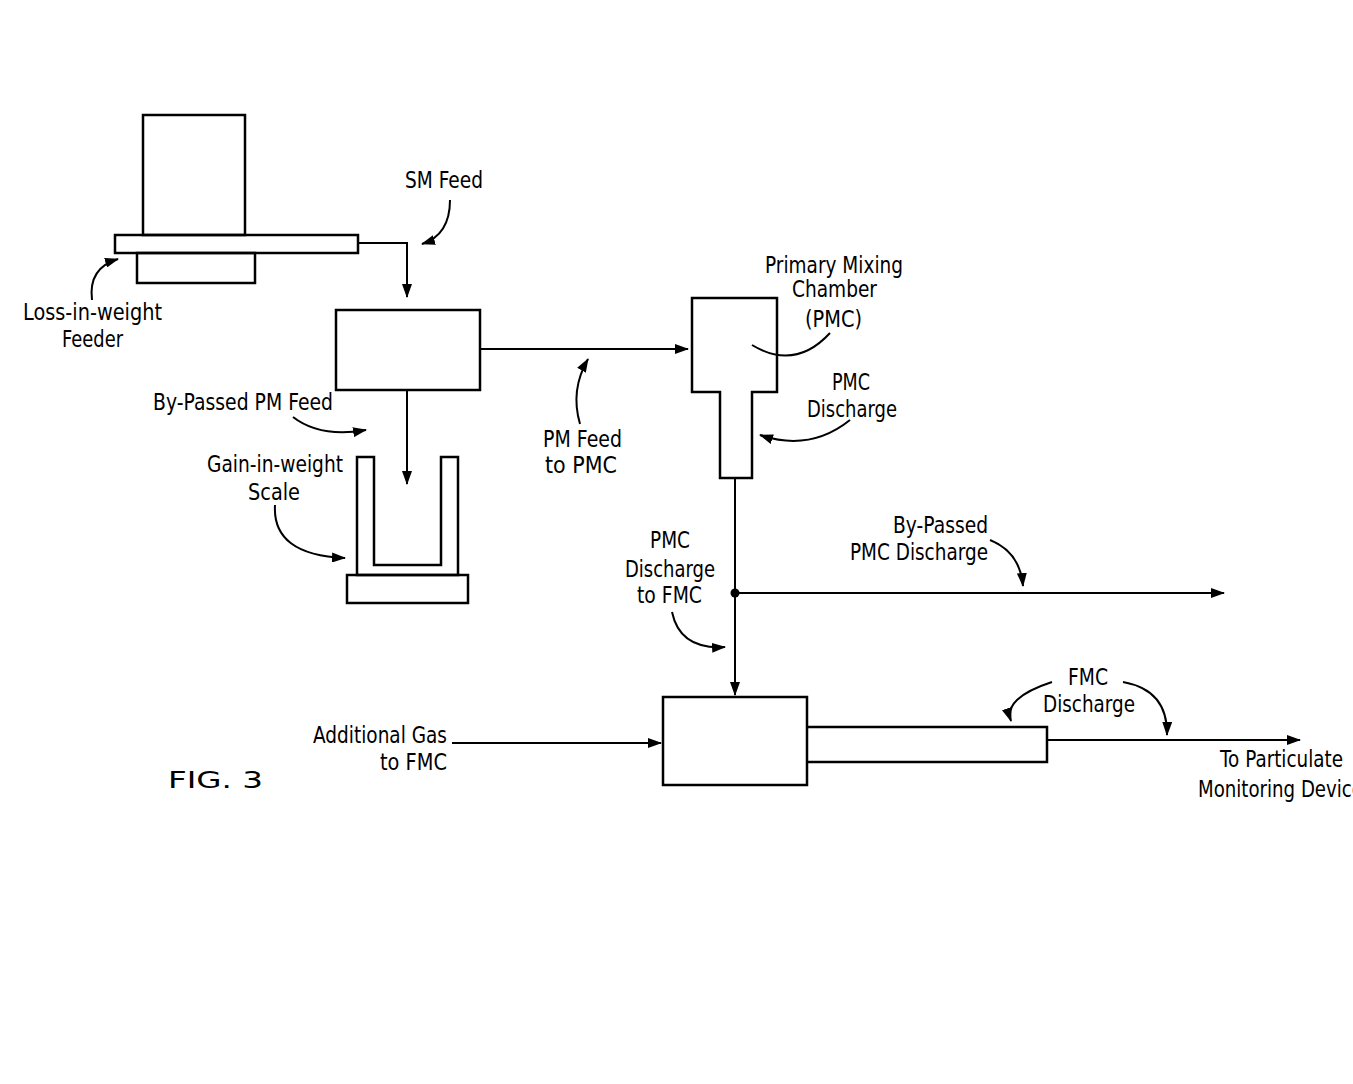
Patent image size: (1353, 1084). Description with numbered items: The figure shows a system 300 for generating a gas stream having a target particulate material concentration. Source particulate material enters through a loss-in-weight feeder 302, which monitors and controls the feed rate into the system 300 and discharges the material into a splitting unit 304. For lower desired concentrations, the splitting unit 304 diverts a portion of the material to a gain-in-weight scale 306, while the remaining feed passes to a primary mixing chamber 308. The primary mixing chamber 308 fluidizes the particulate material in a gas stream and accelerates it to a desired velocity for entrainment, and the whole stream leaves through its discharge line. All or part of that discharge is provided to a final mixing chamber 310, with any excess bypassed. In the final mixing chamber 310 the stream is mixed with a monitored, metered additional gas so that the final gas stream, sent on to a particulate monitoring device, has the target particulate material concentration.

The system 300 is at (812, 216).
The loss-in-weight feeder 302 is at (194, 114).
The splitting unit 304 is at (438, 309).
The gain-in-weight scale 306 is at (346, 587).
The primary mixing chamber 308 is at (740, 297).
The final mixing chamber 310 is at (766, 696).